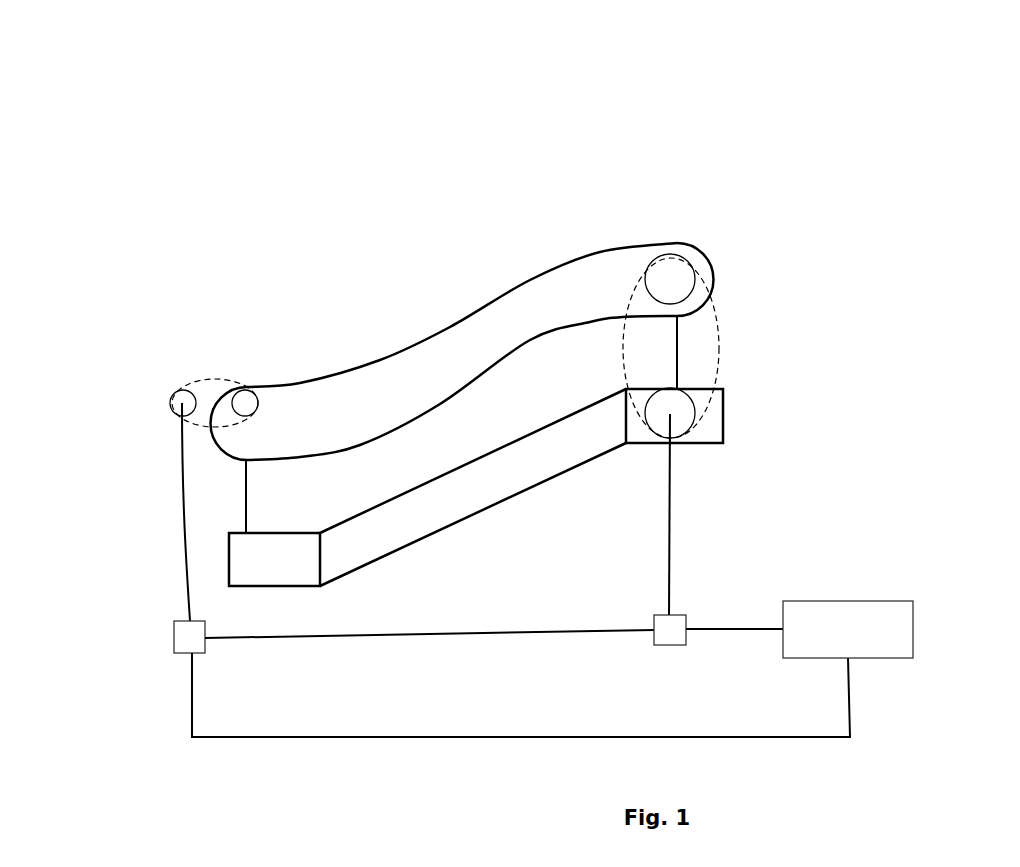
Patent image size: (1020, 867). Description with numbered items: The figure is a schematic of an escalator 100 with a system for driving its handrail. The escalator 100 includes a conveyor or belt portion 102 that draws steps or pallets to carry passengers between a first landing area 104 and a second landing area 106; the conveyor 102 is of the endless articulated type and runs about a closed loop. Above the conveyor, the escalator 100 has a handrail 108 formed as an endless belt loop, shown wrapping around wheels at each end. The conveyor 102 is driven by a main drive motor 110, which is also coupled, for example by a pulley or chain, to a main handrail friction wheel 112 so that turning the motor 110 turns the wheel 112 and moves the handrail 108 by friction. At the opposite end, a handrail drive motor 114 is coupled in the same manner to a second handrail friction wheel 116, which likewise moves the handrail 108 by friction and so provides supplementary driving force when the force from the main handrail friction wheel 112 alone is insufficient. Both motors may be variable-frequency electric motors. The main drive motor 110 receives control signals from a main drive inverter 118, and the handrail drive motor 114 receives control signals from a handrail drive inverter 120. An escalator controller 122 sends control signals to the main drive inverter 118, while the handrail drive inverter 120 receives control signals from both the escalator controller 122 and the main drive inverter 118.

The escalator 100 is at (420, 124).
The conveyor or belt portion 102 is at (723, 407).
The first landing area 104 is at (154, 317).
The second landing area 106 is at (807, 225).
The handrail 108 is at (461, 312).
The main drive motor 110 is at (670, 414).
The main handrail friction wheel 112 is at (670, 279).
The handrail drive motor 114 is at (183, 403).
The second handrail friction wheel 116 is at (247, 402).
The main drive inverter 118 is at (669, 628).
The handrail drive inverter 120 is at (190, 636).
The escalator controller 122 is at (848, 629).